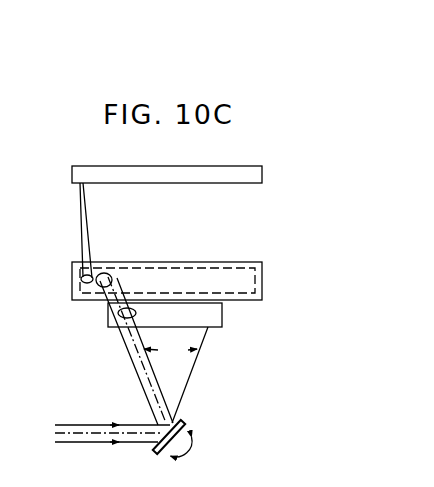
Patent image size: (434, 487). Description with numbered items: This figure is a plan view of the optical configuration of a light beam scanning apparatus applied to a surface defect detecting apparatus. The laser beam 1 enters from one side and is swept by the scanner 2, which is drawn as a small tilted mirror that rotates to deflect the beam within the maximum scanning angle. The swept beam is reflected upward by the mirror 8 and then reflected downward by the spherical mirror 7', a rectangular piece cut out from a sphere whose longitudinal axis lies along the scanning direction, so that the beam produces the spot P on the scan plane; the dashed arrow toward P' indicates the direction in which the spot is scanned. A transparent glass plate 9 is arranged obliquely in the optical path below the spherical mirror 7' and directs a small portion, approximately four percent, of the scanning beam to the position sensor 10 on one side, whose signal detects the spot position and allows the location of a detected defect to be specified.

The position sensor 10 is at (262, 179).
The spherical mirror 7' is at (178, 261).
The transparent glass plate 9 is at (190, 268).
The mirror 8 is at (222, 317).
The laser beam 1 is at (133, 367).
The scanner 2 is at (194, 407).
The spot P is at (62, 280).
The point P' is at (280, 283).